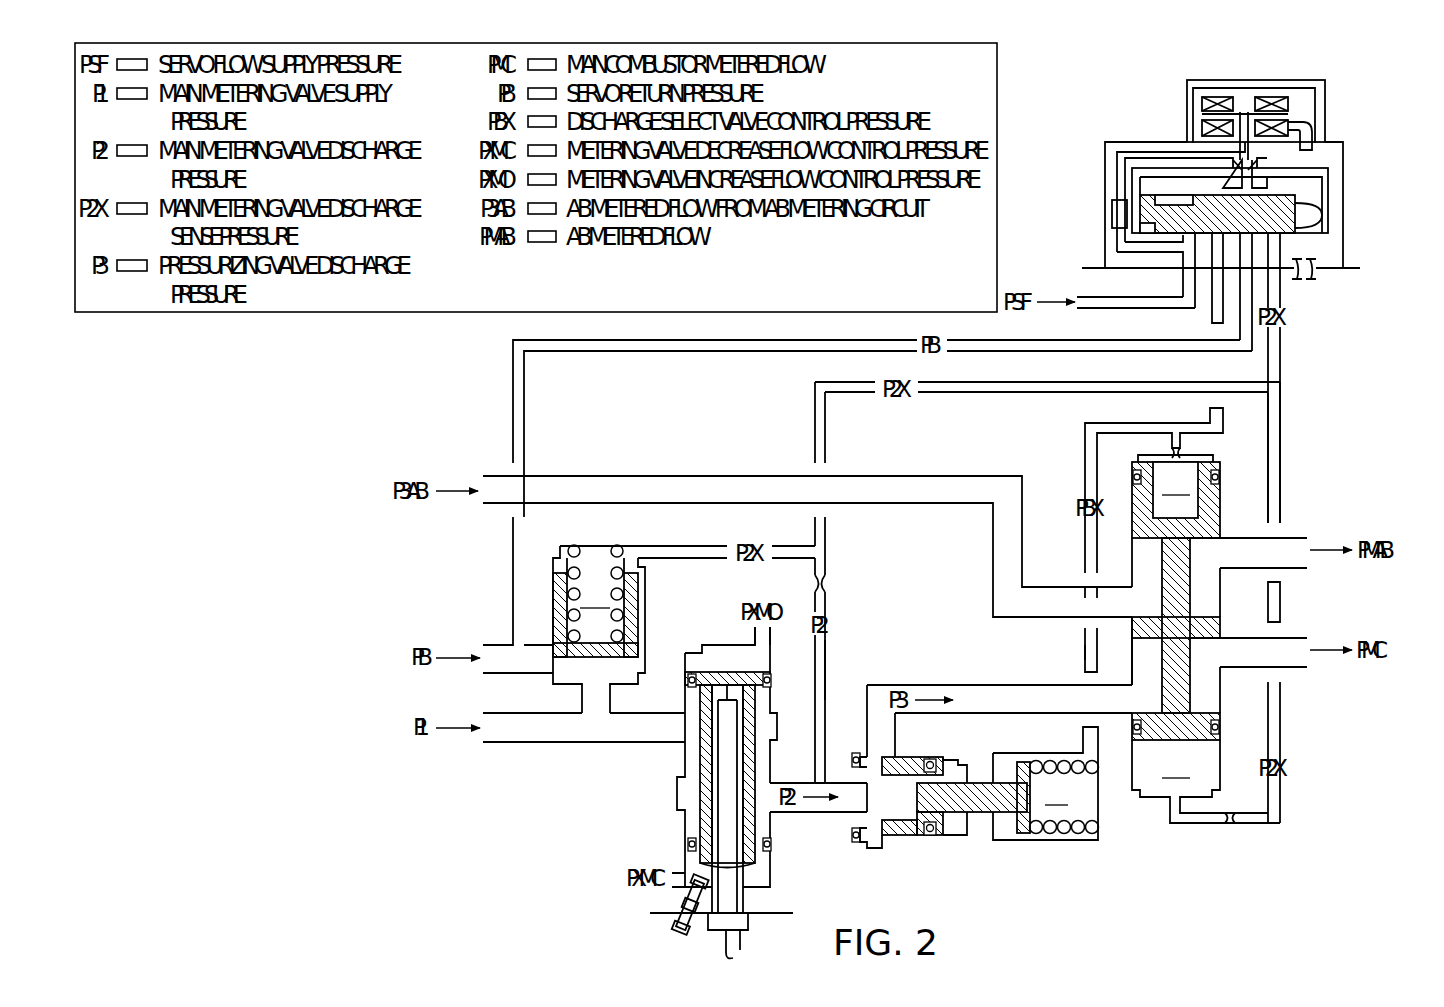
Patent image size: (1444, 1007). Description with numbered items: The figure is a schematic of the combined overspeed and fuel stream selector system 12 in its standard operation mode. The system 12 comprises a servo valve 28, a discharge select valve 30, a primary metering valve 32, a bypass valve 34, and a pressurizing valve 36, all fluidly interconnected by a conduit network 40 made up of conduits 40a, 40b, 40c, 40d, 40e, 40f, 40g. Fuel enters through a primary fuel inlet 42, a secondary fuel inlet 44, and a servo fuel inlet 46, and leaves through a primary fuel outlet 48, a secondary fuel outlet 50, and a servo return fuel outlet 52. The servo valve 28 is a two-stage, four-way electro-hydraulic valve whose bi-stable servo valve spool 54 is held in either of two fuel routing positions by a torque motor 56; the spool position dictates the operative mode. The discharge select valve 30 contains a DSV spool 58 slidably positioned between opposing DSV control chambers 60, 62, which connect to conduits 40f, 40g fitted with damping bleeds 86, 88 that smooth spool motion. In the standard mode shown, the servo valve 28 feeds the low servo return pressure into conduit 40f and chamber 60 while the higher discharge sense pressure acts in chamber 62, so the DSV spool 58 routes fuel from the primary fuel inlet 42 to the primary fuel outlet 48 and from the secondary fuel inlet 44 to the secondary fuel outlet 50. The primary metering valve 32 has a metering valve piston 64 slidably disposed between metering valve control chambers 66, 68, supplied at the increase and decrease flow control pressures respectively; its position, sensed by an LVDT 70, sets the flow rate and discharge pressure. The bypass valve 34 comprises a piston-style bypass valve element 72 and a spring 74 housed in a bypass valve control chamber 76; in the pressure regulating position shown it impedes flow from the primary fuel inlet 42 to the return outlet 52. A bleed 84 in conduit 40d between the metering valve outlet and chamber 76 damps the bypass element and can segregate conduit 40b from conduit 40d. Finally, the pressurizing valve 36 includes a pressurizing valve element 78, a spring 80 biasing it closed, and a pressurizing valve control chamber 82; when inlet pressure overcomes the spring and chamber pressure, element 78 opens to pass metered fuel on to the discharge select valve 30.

The overspeed/stream selector system 12 is at (1050, 232).
The servo valve 28 is at (1345, 150).
The discharge select valve 30 is at (1222, 497).
The primary metering valve 32 is at (683, 829).
The bypass valve 34 is at (553, 652).
The pressurizing valve 36 is at (946, 838).
The conduit network 40 is at (506, 789).
The conduit 40a is at (513, 417).
The conduit 40b is at (735, 545).
The conduit 40c is at (557, 742).
The conduit 40d is at (827, 660).
The conduit 40e is at (835, 812).
The conduit 40f is at (1085, 457).
The conduit 40g is at (1280, 472).
The primary fuel inlet 42 is at (483, 742).
The secondary fuel inlet 44 is at (483, 503).
The servo fuel inlet 46 is at (1077, 297).
The primary fuel outlet 48 is at (1307, 638).
The secondary fuel outlet 50 is at (1307, 538).
The servo return fuel outlet 52 is at (483, 672).
The servo valve spool 54 is at (1312, 214).
The torque motor 56 is at (1245, 97).
The DSV spool 58 is at (1135, 525).
The DSV control chamber 60 is at (1175, 483).
The DSV control chamber 62 is at (1175, 766).
The metering valve piston 64 is at (750, 774).
The metering valve control chamber 66 is at (702, 648).
The metering valve control chamber 68 is at (765, 877).
The LVDT 70 is at (720, 758).
The bypass valve element 72 is at (640, 610).
The spring 74 is at (576, 551).
The bypass valve control chamber 76 is at (595, 596).
The pressurizing valve element 78 is at (913, 836).
The spring 80 is at (1060, 834).
The pressurizing valve control chamber 82 is at (1044, 797).
The bleed 84 is at (826, 583).
The damping bleed 86 is at (1175, 450).
The damping bleed 88 is at (1230, 824).